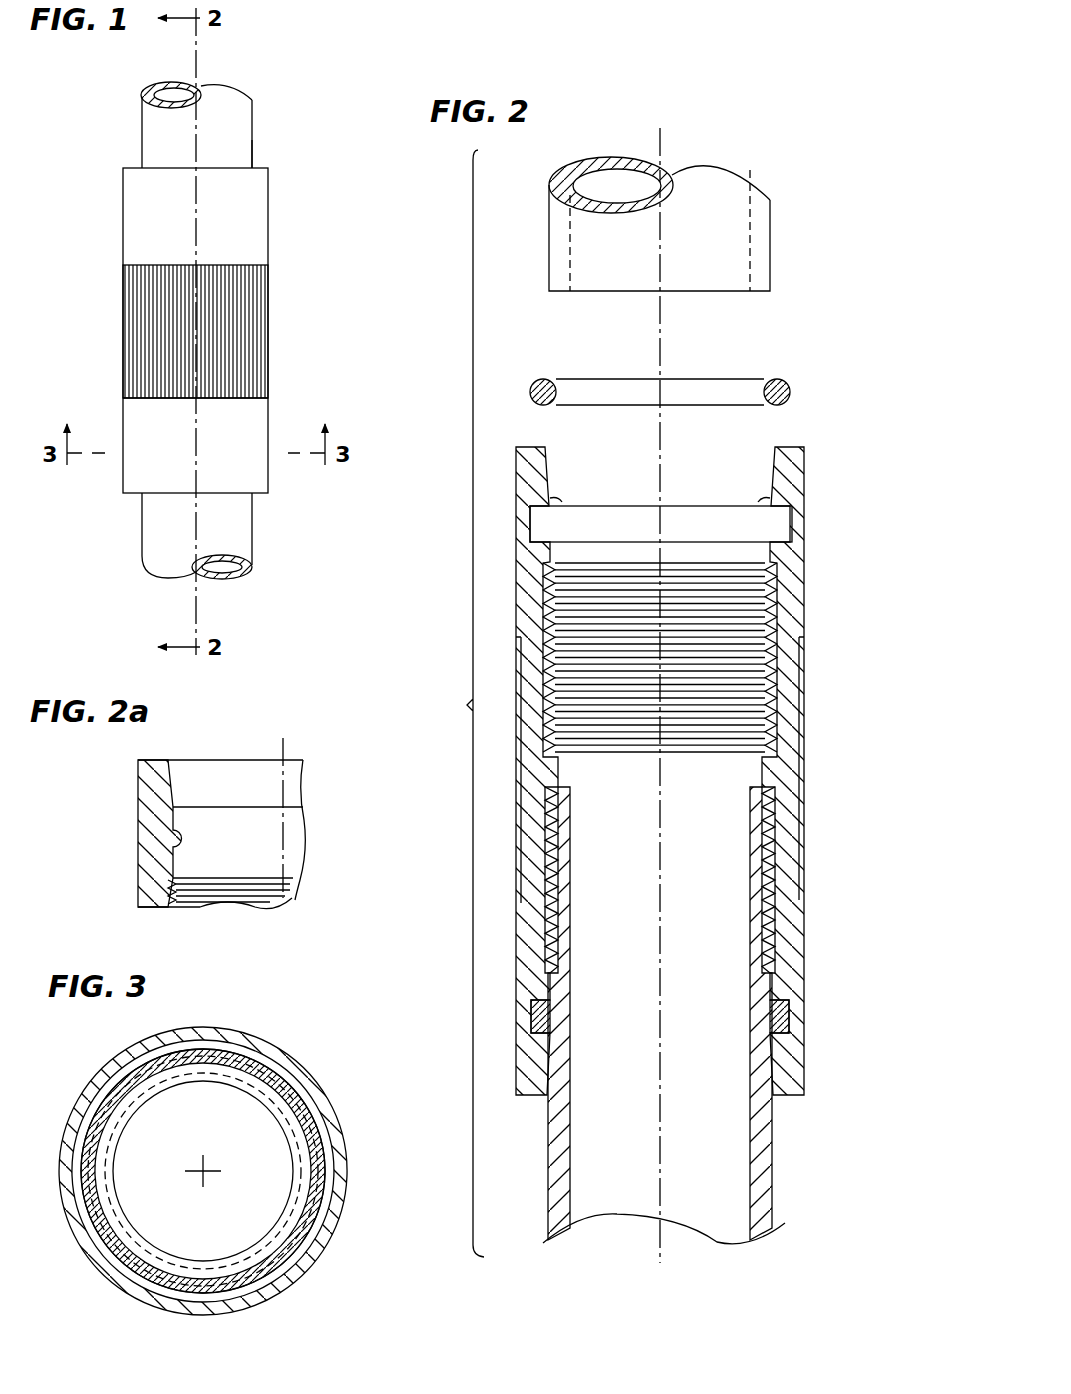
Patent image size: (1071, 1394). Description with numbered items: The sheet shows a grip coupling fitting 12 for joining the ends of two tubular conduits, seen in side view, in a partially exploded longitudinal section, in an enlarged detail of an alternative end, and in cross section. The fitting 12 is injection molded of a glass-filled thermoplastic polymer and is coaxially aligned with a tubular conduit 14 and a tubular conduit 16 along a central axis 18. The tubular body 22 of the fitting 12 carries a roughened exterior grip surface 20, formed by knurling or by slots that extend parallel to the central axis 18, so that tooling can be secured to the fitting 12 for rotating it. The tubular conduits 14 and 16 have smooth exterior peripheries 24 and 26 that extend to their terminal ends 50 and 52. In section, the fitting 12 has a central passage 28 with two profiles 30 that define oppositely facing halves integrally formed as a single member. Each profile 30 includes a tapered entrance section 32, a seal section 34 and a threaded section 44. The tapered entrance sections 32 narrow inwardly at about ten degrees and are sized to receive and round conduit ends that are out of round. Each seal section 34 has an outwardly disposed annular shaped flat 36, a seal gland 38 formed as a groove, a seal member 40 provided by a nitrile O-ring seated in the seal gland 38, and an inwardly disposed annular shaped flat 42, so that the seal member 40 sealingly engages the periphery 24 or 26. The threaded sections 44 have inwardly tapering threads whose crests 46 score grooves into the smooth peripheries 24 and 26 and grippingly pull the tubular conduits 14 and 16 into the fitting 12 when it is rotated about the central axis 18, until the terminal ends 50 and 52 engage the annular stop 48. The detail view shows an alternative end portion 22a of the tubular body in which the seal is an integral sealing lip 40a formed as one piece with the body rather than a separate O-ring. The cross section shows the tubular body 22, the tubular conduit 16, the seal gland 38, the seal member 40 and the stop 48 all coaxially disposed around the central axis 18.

In FIG. 1, the grip coupling fitting 12 is at (230, 330).
In FIG. 2, the grip coupling fitting 12 is at (665, 756).
In FIG. 2a, the grip coupling fitting 12 is at (187, 828).
In FIG. 3, the grip coupling fitting 12 is at (214, 1144).
In FIG. 1, the tubular conduit 14 is at (253, 105).
In FIG. 2, the tubular conduit 14 is at (770, 212).
In FIG. 1, the tubular conduit 16 is at (252, 536).
In FIG. 2, the tubular conduit 16 is at (690, 983).
In FIG. 3, the tubular conduit 16 is at (227, 1042).
In FIG. 1, the central axis 18 is at (198, 76).
In FIG. 2, the central axis 18 is at (661, 130).
In FIG. 3, the central axis 18 is at (207, 1166).
In FIG. 1, the grip surface 20 is at (258, 330).
In FIG. 1, the tubular body 22 is at (262, 420).
In FIG. 2, the tubular body 22 is at (798, 608).
In FIG. 3, the tubular body 22 is at (327, 1110).
In FIG. 2a, the end portion of body (alternate) 22a is at (137, 807).
In FIG. 1, the exterior periphery 24 is at (253, 155).
In FIG. 2, the exterior periphery 24 is at (770, 270).
In FIG. 1, the exterior periphery 26 is at (142, 505).
In FIG. 2, the exterior periphery 26 is at (775, 1115).
In FIG. 2, the central passage 28 is at (545, 620).
In FIG. 2, the profiles 30 is at (755, 583).
In FIG. 2, the tapered entrance section 32 is at (773, 472).
In FIG. 2, the seal section 34 is at (538, 527).
In FIG. 2, the annular shaped flat 36 is at (555, 498).
In FIG. 2, the seal gland 38 is at (777, 525).
In FIG. 3, the seal gland 38 is at (332, 1193).
In FIG. 2, the seal member 40 is at (785, 390).
In FIG. 3, the seal member 40 is at (331, 1150).
In FIG. 2a, the integral sealing lip 40a is at (180, 838).
In FIG. 2, the annular shaped flat 42 is at (553, 555).
In FIG. 2, the threaded section 44 is at (763, 877).
In FIG. 3, the threaded section 44 is at (338, 1238).
In FIG. 2, the crests 46 is at (568, 862).
In FIG. 2, the stop 48 is at (690, 740).
In FIG. 3, the stop 48 is at (120, 1117).
In FIG. 2, the terminal end 50 is at (765, 292).
In FIG. 2, the terminal end 52 is at (778, 778).